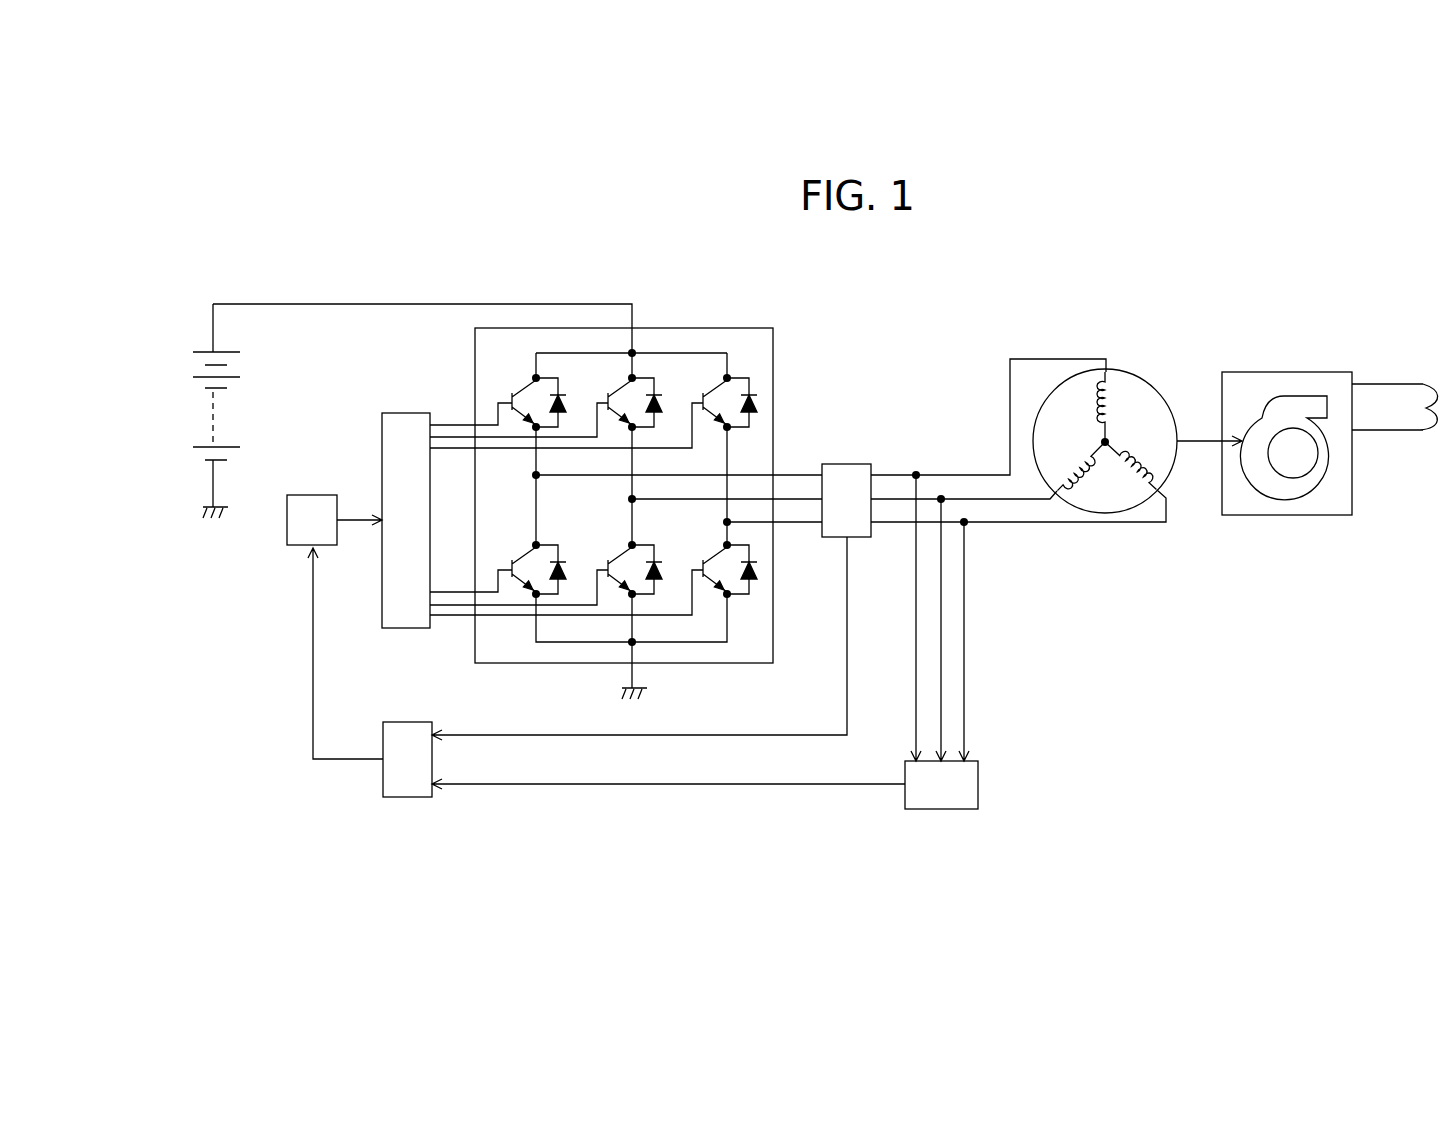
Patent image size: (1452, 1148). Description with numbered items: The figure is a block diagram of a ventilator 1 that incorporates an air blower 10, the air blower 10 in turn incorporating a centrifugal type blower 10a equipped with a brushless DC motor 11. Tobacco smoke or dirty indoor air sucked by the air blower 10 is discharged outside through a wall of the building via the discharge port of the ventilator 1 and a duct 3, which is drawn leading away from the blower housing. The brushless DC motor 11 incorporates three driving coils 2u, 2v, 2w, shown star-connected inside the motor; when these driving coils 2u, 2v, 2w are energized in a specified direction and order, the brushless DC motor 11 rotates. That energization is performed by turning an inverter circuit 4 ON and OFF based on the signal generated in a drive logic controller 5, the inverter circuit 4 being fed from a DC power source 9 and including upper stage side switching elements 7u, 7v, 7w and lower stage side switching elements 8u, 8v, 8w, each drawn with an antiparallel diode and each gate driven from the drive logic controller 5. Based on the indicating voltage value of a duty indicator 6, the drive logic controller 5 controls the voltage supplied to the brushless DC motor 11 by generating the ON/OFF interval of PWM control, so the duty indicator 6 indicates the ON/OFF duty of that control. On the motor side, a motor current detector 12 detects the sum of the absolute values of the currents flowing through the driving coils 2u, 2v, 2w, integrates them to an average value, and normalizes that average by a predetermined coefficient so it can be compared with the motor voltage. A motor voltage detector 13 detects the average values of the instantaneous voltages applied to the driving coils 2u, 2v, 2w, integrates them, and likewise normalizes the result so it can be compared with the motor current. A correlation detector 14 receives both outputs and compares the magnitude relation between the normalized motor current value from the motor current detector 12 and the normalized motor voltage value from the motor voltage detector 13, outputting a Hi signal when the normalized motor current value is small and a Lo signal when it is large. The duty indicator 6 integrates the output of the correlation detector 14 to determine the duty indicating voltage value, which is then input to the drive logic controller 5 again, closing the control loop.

The ventilator 1 is at (1282, 495).
The air blower 10 is at (1258, 515).
The centrifugal type blower 10a is at (1288, 395).
The brushless DC motor 11 is at (1143, 380).
The driving coil 2u is at (1090, 403).
The driving coil 2v is at (1083, 488).
The driving coil 2w is at (1137, 488).
The duct 3 is at (1405, 383).
The inverter circuit 4 is at (775, 375).
The drive logic controller 5 is at (382, 590).
The duty indicator 6 is at (287, 522).
The upper stage side switching element 7u is at (530, 398).
The upper stage side switching element 7v is at (629, 398).
The upper stage side switching element 7w is at (722, 398).
The lower stage side switching element 8u is at (530, 562).
The lower stage side switching element 8v is at (629, 562).
The lower stage side switching element 8w is at (722, 562).
The DC power source 9 is at (192, 413).
The motor current detector 12 is at (842, 464).
The motor voltage detector 13 is at (978, 783).
The correlation detector 14 is at (383, 780).